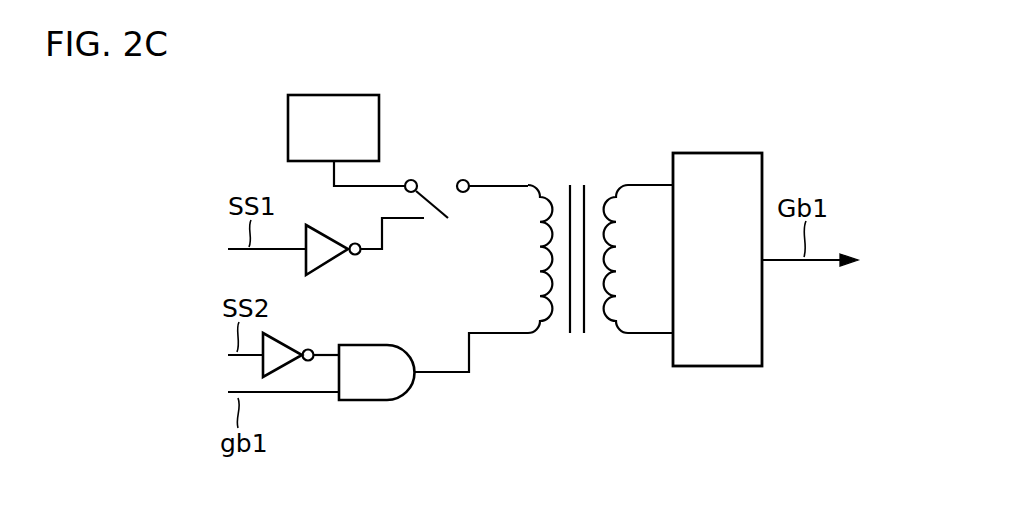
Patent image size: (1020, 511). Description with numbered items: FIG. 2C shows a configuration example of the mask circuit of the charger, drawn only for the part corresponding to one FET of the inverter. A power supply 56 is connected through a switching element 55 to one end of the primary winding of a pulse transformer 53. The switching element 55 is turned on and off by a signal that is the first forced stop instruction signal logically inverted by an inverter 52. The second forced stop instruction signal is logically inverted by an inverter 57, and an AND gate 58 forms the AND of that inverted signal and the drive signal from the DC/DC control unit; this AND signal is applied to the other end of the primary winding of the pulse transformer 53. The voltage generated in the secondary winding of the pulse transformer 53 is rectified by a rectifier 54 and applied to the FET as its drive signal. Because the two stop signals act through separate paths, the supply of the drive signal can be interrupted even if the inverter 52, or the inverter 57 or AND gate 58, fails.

The inverter 52 is at (335, 240).
The pulse transformer 53 is at (557, 340).
The rectifier 54 is at (715, 152).
The switching element 55 is at (437, 182).
The power supply 56 is at (332, 94).
The inverter 57 is at (287, 343).
The AND gate 58 is at (373, 344).